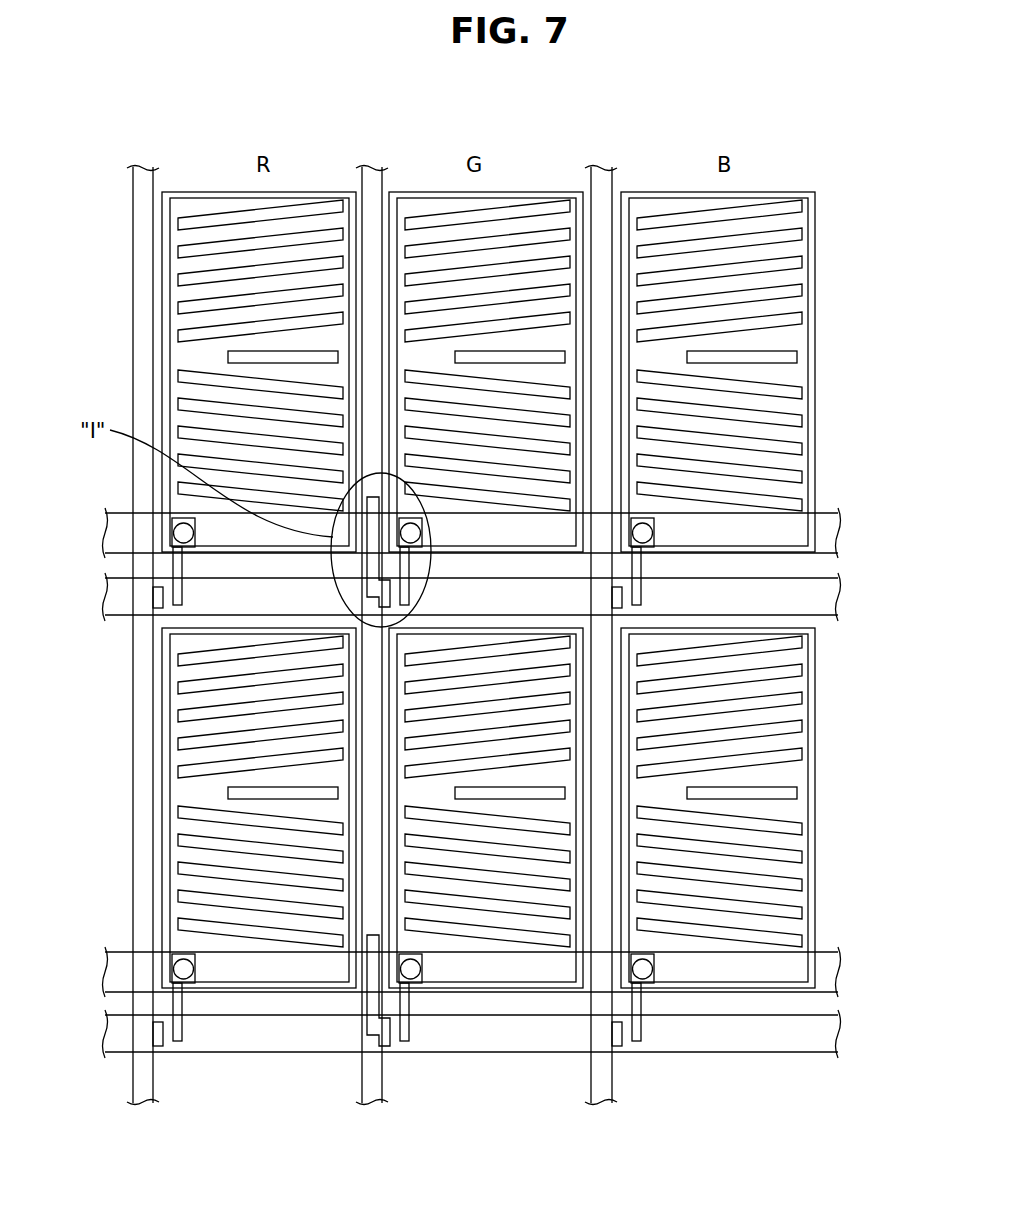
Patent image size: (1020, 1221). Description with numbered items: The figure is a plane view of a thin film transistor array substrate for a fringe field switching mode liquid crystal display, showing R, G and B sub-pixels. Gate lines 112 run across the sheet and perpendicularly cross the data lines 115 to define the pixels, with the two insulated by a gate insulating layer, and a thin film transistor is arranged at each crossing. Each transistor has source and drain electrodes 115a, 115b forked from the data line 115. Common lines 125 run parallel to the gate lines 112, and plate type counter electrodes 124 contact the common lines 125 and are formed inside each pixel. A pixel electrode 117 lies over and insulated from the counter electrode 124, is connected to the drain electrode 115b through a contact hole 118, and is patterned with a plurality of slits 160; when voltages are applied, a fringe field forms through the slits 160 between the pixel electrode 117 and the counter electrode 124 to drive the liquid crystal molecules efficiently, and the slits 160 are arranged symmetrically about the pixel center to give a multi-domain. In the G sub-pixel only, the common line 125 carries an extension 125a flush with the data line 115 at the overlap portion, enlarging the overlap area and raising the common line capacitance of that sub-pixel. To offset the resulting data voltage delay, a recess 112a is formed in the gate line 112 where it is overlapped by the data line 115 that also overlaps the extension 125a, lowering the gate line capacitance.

The gate line 112 is at (840, 596).
The recess 112a is at (368, 599).
The data line 115 is at (602, 178).
The source electrode 115a is at (155, 596).
The drain electrode 115b is at (173, 565).
The pixel electrode 117 is at (801, 357).
The contact hole 118 is at (653, 533).
The counter electrode 124 is at (817, 380).
The common line 125 is at (840, 531).
The extension 125a is at (373, 496).
The slit 160 is at (804, 289).